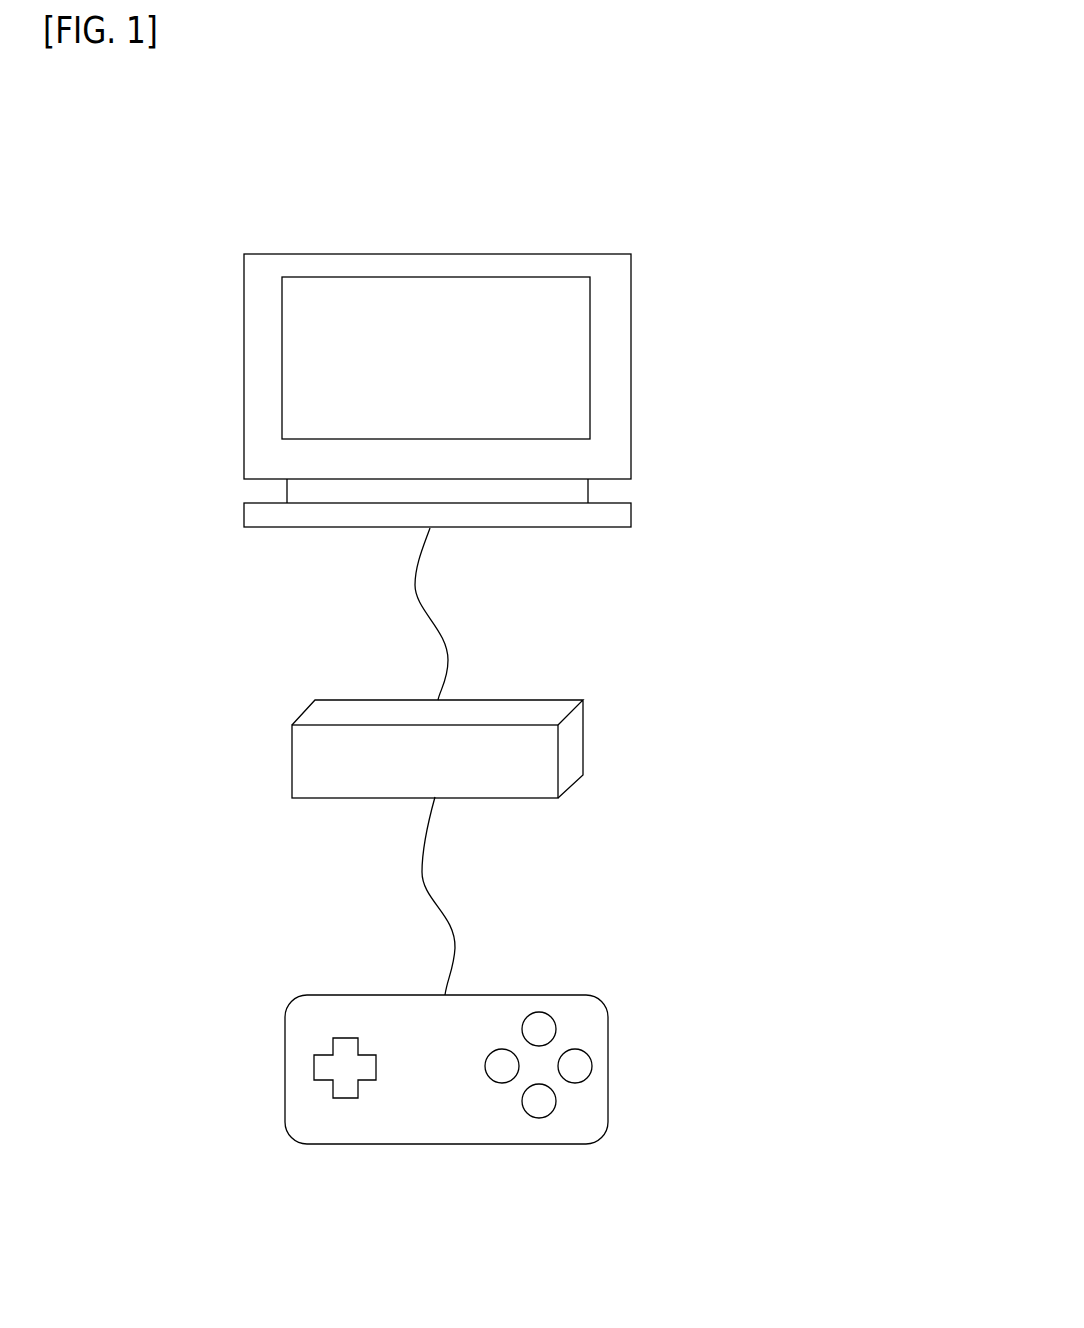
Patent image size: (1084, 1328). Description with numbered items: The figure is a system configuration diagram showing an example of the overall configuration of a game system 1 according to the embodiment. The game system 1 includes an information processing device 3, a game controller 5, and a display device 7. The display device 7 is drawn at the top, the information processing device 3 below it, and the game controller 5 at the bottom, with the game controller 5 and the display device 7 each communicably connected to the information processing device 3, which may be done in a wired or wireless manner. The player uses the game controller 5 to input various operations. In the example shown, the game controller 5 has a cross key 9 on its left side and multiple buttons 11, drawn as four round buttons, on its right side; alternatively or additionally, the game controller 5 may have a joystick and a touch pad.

The game system 1 is at (857, 395).
The information processing device 3 is at (583, 738).
The game controller 5 is at (607, 1060).
The display device 7 is at (430, 253).
The cross key 9 is at (345, 1098).
The buttons 11 is at (568, 1033).